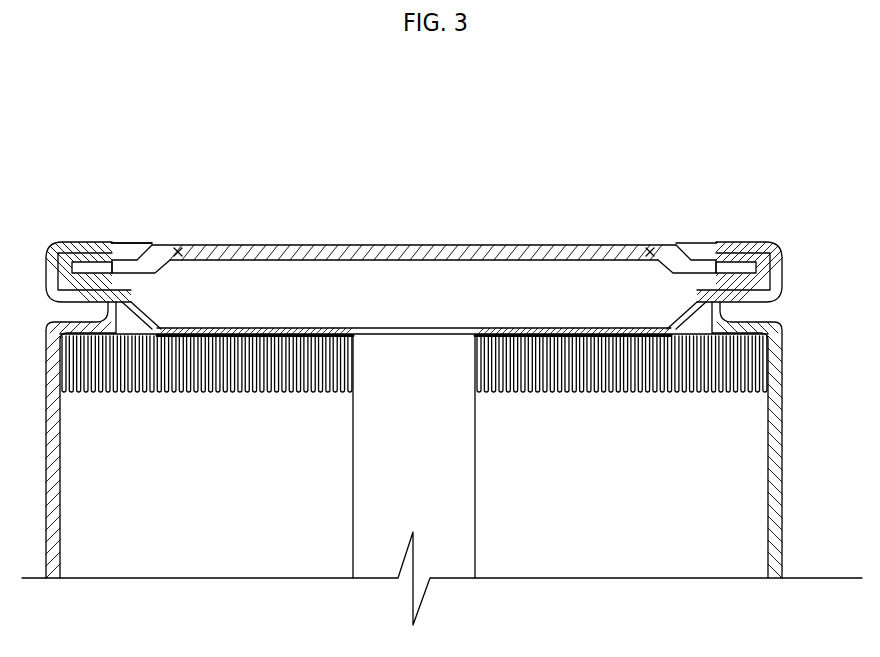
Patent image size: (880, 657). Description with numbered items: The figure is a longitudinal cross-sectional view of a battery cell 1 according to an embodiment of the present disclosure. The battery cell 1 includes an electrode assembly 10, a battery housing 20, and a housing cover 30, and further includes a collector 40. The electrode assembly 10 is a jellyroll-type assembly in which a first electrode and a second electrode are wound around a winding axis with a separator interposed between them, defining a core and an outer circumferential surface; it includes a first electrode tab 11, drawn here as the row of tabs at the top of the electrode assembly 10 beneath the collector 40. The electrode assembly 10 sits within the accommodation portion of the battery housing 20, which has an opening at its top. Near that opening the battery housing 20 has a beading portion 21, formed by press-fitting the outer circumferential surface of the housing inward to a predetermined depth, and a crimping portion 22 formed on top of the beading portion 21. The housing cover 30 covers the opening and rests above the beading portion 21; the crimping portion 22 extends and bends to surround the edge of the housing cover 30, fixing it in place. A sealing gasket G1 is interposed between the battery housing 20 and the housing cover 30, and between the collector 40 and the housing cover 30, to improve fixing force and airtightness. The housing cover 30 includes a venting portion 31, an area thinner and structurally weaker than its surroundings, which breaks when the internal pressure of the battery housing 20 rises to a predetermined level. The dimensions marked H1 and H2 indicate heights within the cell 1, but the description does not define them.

The battery cell 1 is at (180, 133).
The electrode assembly 10 is at (727, 482).
The first electrode tab 11 is at (747, 362).
The battery housing 20 is at (782, 431).
The beading portion 21 is at (790, 305).
The crimping portion 22 is at (801, 269).
The housing cover 30 is at (580, 244).
The venting portion 31 is at (178, 248).
The collector 40 is at (297, 316).
The sealing gasket G1 is at (120, 253).
The first height H1 is at (431, 466).
The second height H2 is at (392, 327).